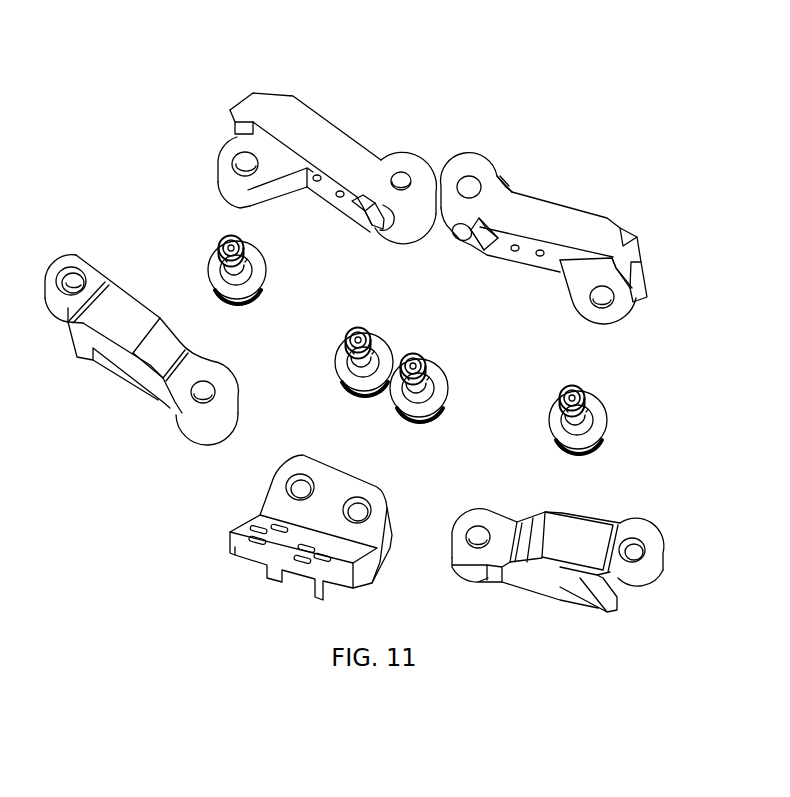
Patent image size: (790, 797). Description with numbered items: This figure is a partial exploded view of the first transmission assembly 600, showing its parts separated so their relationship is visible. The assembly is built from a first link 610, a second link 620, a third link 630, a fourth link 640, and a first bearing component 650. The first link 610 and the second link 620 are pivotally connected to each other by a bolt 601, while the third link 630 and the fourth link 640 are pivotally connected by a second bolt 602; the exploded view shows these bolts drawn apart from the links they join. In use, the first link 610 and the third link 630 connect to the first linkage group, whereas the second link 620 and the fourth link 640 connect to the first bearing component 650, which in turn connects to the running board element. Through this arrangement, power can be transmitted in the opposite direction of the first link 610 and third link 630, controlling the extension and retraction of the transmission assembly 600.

The first transmission assembly 600 is at (373, 57).
The first link 610 is at (332, 148).
The second link 620 is at (197, 370).
The third link 630 is at (522, 217).
The fourth link 640 is at (583, 535).
The first bearing component 650 is at (325, 480).
The bolt 601 is at (262, 270).
The second bolt 602 is at (442, 372).